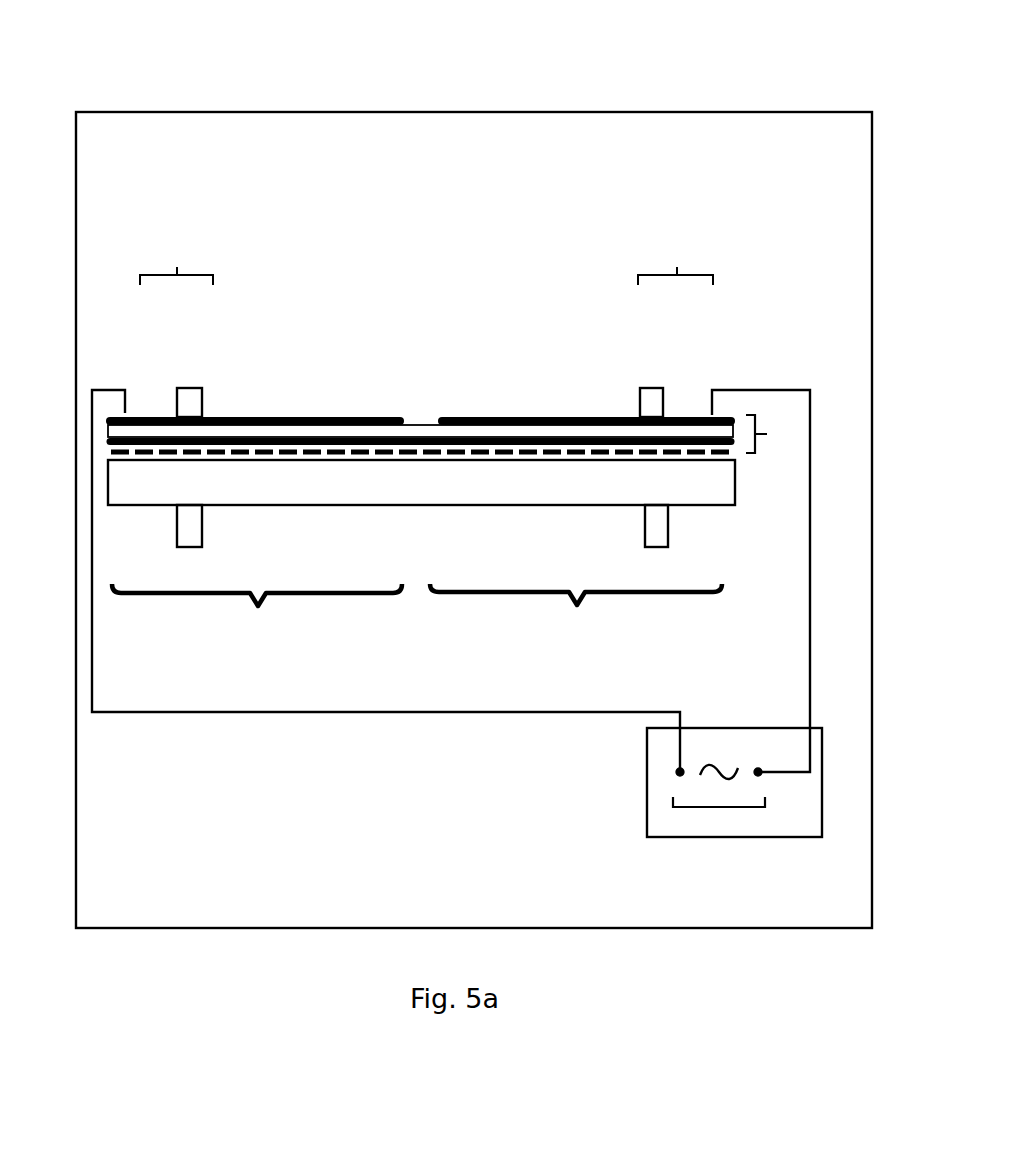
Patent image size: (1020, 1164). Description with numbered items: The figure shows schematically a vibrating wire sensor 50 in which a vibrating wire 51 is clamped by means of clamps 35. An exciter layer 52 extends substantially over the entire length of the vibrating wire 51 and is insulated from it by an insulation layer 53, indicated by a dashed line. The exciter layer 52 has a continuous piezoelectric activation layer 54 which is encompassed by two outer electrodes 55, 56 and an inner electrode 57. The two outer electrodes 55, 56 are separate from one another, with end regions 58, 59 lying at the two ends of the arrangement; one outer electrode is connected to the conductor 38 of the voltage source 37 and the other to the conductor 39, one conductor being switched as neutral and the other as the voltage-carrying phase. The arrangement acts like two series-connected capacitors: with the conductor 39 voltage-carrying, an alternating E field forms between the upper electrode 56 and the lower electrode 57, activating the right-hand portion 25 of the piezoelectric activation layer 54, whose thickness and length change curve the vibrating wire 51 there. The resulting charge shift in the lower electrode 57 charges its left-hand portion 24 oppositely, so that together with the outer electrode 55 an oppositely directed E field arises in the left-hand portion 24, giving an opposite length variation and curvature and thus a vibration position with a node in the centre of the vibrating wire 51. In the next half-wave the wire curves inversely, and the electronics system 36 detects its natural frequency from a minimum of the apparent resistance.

The vibrating wire sensor 50 is at (505, 112).
The exciter layer 52 is at (498, 259).
The first edge region 58 is at (176, 253).
The second edge region 59 is at (675, 253).
The clamps 35 is at (182, 392).
The outer electrode 55 is at (246, 414).
The piezoelectric activation layer 54 is at (328, 431).
The inner electrode 57 is at (424, 441).
The outer electrode 56 is at (568, 414).
The conductor 39 is at (760, 390).
The vibrating wire 51 is at (421, 482).
The insulation layer 53 is at (405, 456).
The left-hand portion 24 is at (257, 619).
The right-hand portion 25 is at (576, 617).
The conductor 38 is at (420, 716).
The electronics system 36 is at (645, 768).
The voltage source 37 is at (720, 810).